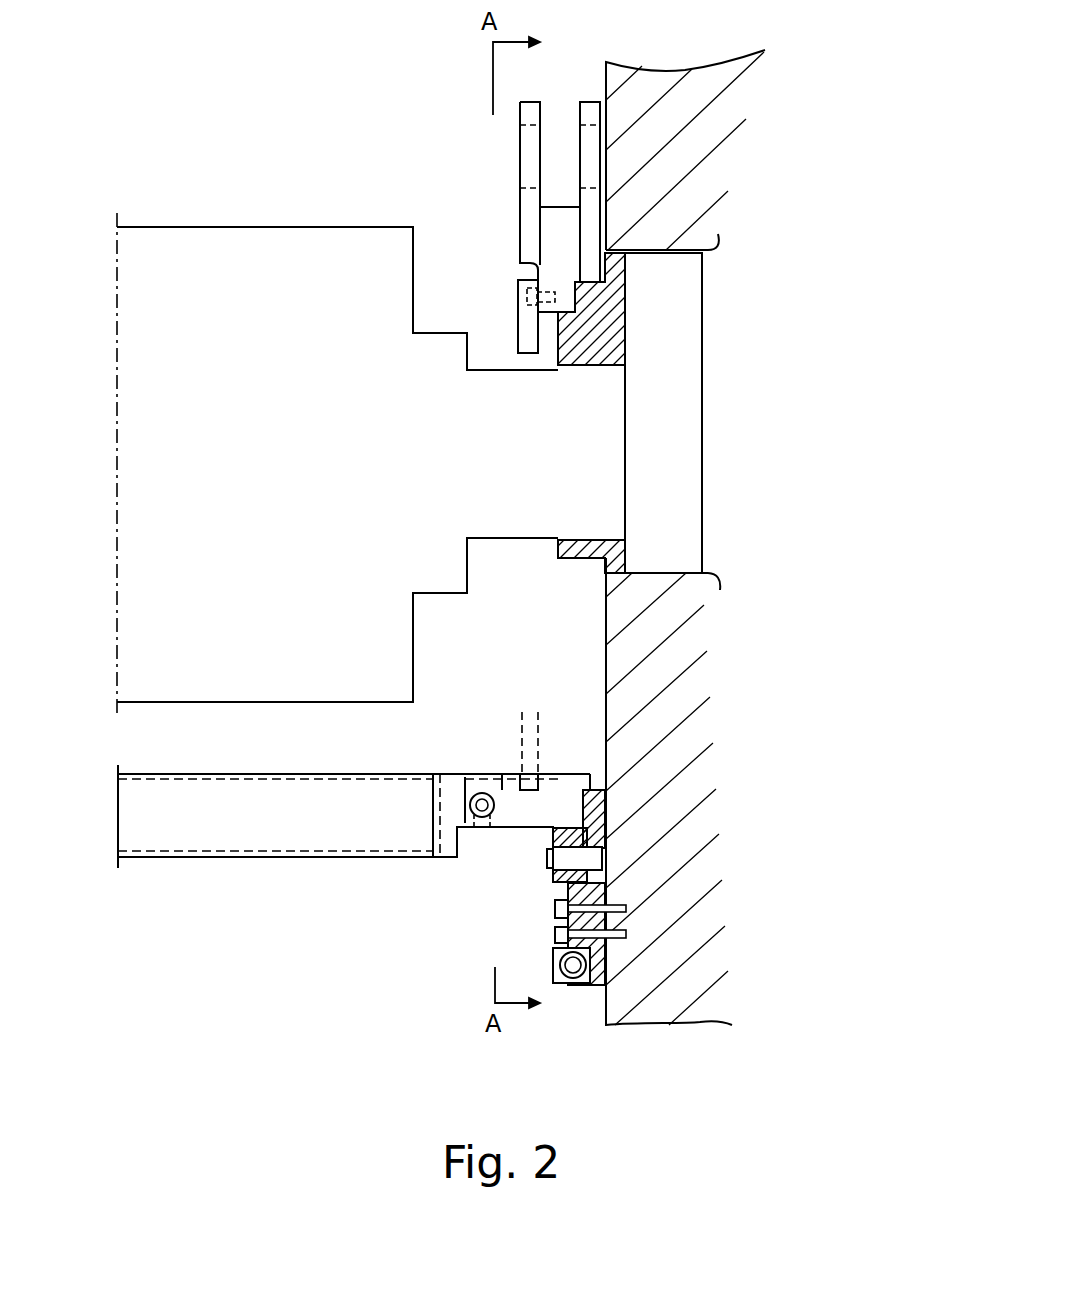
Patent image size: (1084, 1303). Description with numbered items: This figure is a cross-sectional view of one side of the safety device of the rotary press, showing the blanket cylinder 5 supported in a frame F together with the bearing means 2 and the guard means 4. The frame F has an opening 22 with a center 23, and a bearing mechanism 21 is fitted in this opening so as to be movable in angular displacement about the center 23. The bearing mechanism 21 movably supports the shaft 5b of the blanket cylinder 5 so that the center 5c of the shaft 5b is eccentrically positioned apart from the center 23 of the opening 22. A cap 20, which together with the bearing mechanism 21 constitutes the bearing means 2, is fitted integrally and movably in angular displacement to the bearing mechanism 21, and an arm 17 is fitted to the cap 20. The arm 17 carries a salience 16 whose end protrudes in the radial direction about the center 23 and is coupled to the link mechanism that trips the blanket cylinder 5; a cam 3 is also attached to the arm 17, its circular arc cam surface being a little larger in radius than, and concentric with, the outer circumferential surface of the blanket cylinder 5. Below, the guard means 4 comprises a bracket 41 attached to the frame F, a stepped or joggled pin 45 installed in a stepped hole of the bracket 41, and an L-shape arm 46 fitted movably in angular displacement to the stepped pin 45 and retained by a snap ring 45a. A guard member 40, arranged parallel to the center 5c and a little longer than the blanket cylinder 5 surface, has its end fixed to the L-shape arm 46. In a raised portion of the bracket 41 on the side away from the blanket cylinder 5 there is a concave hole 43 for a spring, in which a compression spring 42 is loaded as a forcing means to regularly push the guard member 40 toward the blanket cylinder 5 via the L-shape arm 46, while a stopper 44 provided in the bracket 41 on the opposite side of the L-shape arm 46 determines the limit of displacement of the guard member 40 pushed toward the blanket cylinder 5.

The bearing means 2 is at (776, 402).
The cam 3 is at (528, 326).
The guard means 4 is at (447, 845).
The blanket cylinder 5 is at (133, 580).
The shaft 5b is at (502, 527).
The center of the shaft 5c is at (62, 455).
The salience 16 is at (625, 157).
The arm 17 is at (538, 243).
The cap 20 is at (572, 556).
The bearing mechanism 21 is at (690, 320).
The opening 22 is at (663, 573).
The center of the opening 23 is at (612, 413).
The guard member 40 is at (322, 840).
The bracket 41 is at (598, 987).
The compression spring 42 is at (553, 948).
The concave hole for spring 43 is at (553, 970).
The stopper 44 is at (570, 790).
The stepped pin 45 is at (607, 853).
The snap ring 45a is at (548, 862).
The L-shape arm 46 is at (548, 793).
The frame F is at (690, 636).